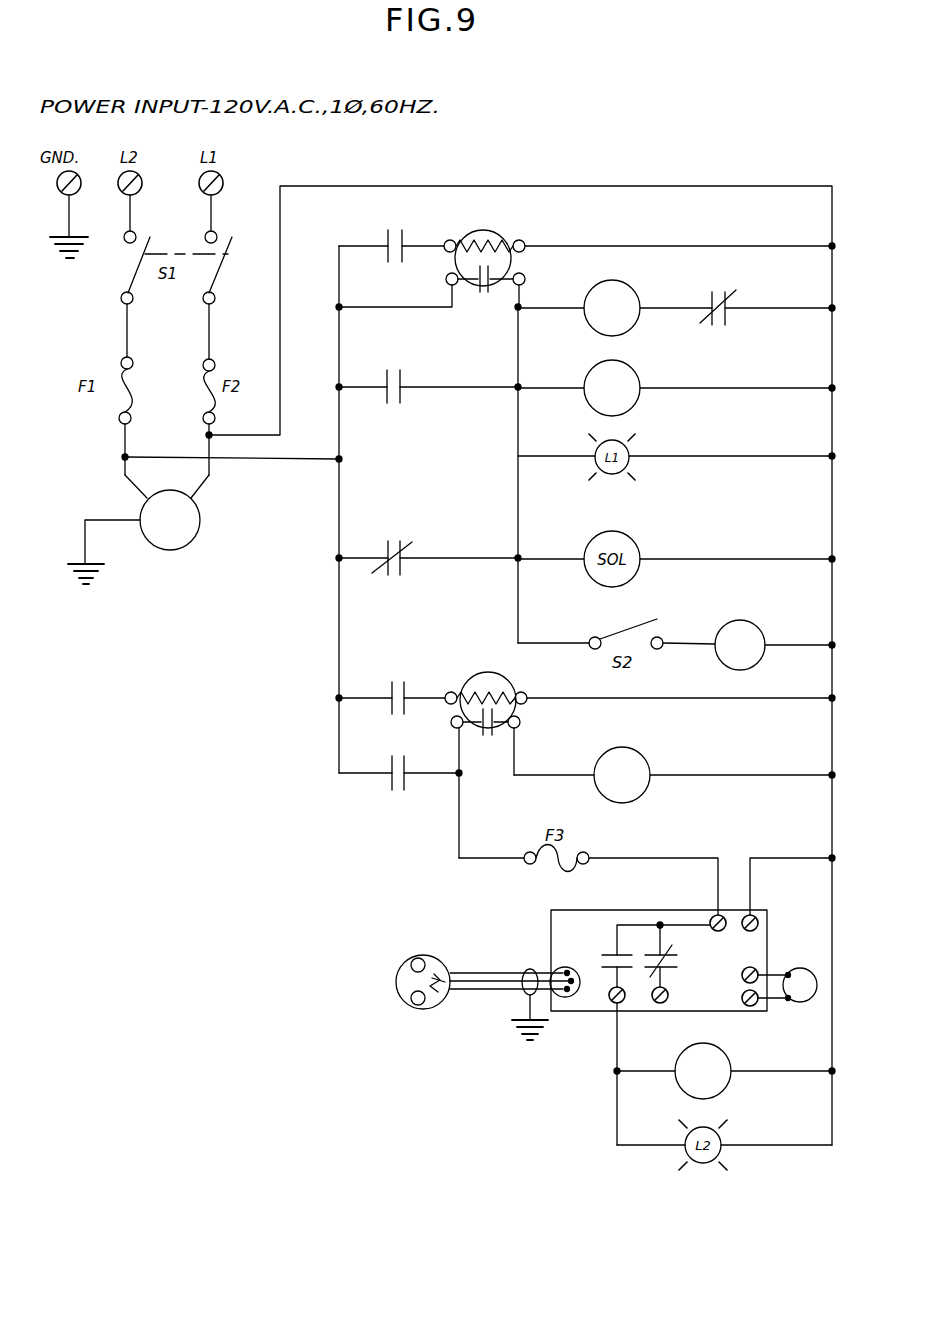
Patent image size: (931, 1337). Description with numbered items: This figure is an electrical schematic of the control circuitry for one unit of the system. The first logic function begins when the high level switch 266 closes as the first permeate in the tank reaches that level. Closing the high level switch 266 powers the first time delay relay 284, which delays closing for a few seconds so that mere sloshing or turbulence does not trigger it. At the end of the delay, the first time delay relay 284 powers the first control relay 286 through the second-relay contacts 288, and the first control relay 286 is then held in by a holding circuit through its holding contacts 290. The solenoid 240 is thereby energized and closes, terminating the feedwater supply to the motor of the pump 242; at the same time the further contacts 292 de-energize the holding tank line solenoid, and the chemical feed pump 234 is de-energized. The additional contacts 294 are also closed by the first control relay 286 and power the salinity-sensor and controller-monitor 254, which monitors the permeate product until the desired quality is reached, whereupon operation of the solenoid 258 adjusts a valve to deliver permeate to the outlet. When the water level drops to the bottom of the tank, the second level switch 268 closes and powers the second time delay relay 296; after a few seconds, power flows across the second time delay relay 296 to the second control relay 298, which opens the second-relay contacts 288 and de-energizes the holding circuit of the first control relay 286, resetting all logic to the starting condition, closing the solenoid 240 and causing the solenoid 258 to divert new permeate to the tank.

The pump 242 is at (178, 537).
The high level switch LS-1 266 is at (388, 240).
The time delay relay TDR-1 284 is at (503, 246).
The control relay CR1 286 is at (628, 292).
The contacts CR2 288 is at (730, 304).
The contacts CR1 290 is at (403, 385).
The solenoid 240 is at (640, 393).
The contacts CR1 292 is at (402, 556).
The chemical feed pump M2 234 is at (738, 620).
The second level switch LS-2 268 is at (392, 706).
The time delay relay TDR-2 296 is at (521, 700).
The control relay CR2 298 is at (643, 755).
The contacts CR1 294 is at (392, 790).
The salinity-sensor and controller-monitor 254 is at (553, 918).
The solenoid 258 is at (720, 1083).